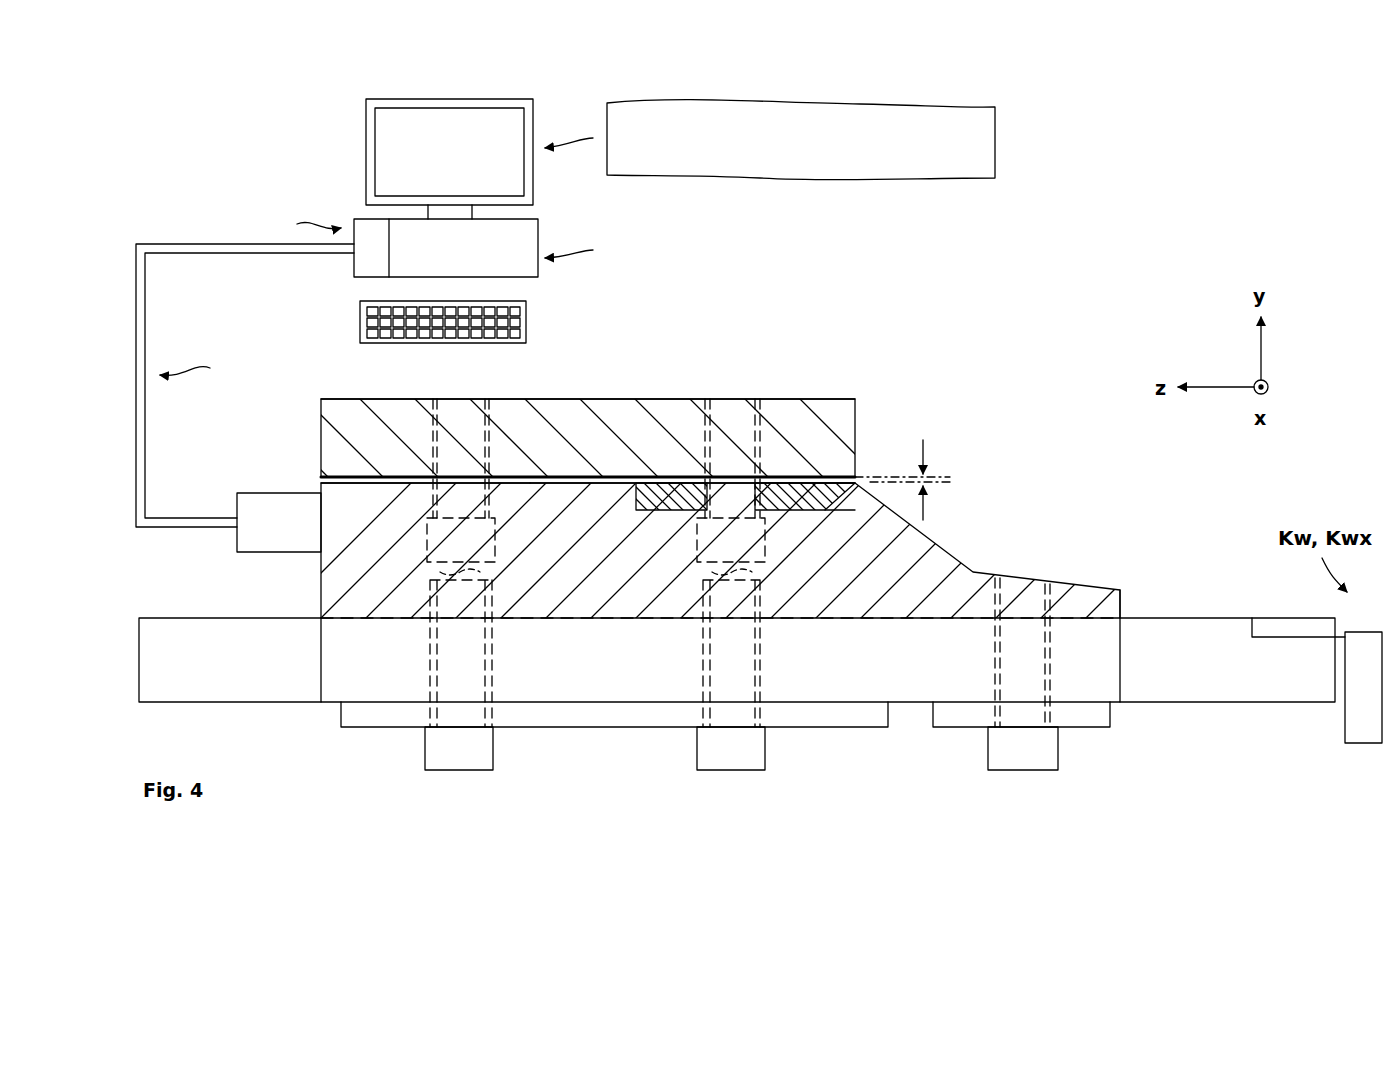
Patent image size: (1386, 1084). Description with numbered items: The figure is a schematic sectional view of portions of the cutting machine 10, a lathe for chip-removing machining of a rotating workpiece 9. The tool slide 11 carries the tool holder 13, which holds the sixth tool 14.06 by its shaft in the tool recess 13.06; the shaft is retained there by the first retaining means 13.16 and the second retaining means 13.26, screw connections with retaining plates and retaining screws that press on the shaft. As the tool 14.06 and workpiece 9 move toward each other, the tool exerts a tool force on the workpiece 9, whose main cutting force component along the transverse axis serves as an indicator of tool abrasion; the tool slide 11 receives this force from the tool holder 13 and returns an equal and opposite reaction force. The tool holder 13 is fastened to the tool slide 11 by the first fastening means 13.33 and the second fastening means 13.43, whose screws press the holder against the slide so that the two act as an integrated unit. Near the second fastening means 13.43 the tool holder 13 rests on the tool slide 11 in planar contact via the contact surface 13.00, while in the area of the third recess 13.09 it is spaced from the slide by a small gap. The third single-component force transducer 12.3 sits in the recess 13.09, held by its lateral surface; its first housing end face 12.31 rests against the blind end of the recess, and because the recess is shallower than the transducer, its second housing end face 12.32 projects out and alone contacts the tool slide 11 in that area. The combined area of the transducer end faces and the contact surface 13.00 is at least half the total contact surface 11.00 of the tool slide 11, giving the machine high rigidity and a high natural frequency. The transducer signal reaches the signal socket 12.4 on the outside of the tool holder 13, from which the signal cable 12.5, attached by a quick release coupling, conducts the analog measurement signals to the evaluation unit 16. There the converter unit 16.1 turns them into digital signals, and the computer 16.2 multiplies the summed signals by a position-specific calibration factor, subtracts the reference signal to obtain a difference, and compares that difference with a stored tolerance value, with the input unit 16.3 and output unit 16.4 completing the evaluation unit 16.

The cutting machine 10 is at (1193, 190).
The workpiece 9 is at (1363, 687).
The tool slide 11 is at (591, 438).
The total contact surface of the tool slide 11.00 is at (388, 477).
The tool holder 13 is at (748, 550).
The contact surface 13.00 is at (510, 477).
The tool recess 13.06 is at (720, 658).
The third recess 13.09 is at (805, 515).
The first retaining means 13.16 is at (1085, 715).
The second retaining means 13.26 is at (838, 715).
The first fastening means 13.33 is at (704, 546).
The second fastening means 13.43 is at (494, 546).
The third single-component force transducer 12.3 is at (810, 492).
The first housing end face 12.31 is at (672, 508).
The second housing end face 12.32 is at (652, 507).
The signal socket 12.4 is at (279, 522).
The signal cable 12.5 is at (140, 472).
The sixth tool 14.06 is at (1224, 678).
The evaluation unit 16 is at (298, 145).
The converter unit 16.1 is at (366, 226).
The computer 16.2 is at (446, 248).
The input unit 16.3 is at (530, 313).
The output unit 16.4 is at (449, 159).